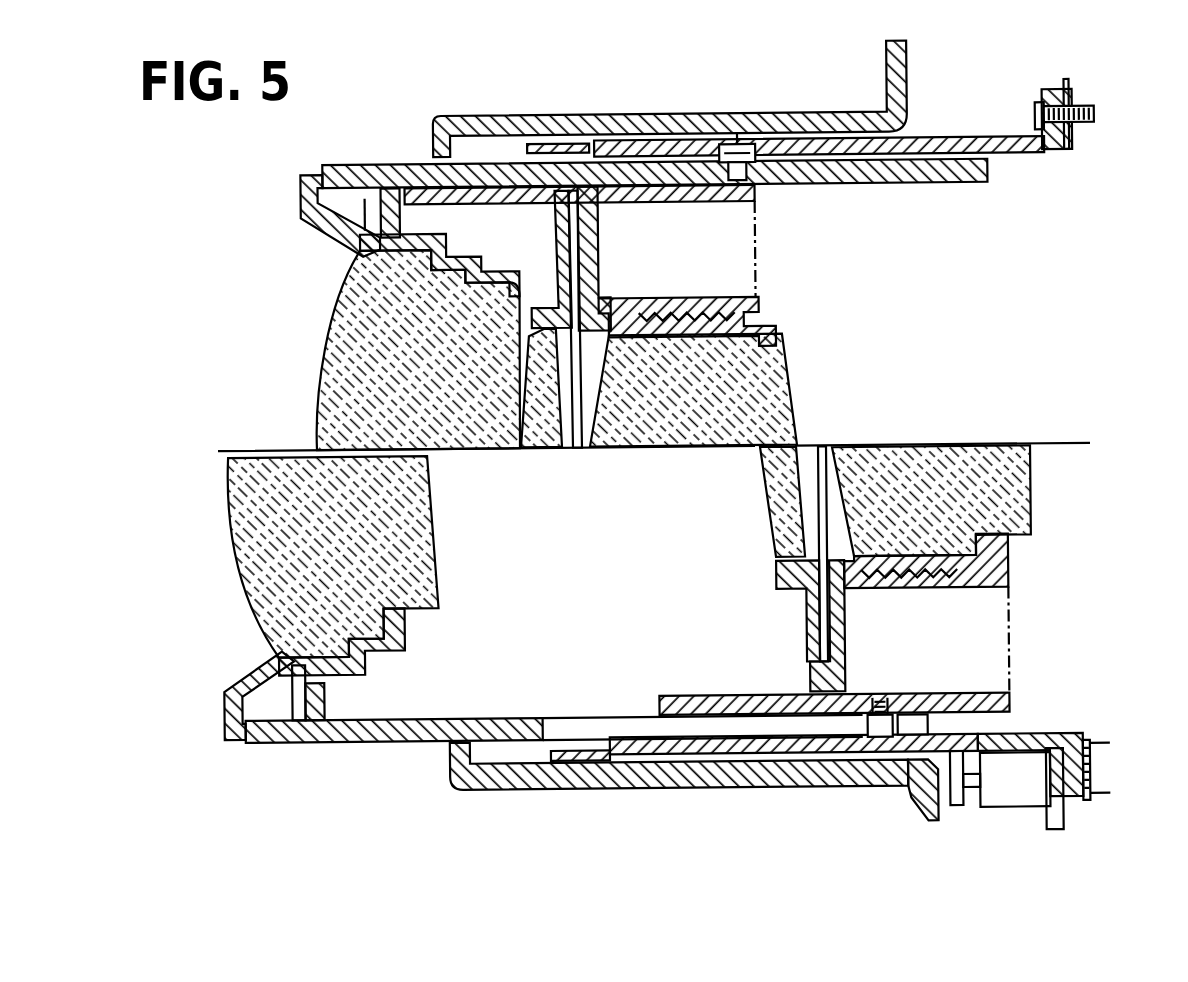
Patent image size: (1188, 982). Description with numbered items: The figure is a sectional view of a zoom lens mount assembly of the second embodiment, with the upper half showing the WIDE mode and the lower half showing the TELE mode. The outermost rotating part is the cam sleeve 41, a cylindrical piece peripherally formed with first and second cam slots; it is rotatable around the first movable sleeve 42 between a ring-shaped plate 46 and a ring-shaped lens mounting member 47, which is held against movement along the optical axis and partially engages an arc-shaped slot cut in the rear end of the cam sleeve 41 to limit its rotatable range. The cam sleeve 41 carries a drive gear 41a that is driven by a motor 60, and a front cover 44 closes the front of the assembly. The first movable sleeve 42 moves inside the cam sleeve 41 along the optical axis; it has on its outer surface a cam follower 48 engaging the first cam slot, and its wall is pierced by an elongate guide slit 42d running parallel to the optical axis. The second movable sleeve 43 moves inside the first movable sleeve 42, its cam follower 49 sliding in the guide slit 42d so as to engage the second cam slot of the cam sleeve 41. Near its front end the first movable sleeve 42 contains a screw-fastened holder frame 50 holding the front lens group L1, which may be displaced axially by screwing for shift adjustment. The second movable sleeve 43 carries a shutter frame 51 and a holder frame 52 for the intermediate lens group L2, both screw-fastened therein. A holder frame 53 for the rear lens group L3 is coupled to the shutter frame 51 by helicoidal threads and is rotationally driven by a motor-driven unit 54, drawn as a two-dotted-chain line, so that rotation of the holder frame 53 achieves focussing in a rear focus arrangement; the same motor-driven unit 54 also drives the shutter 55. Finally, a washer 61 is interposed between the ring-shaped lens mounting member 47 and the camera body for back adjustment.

The cam sleeve 41 is at (948, 141).
The drive gear 41a is at (918, 795).
The first movable sleeve 42 is at (915, 187).
The elongate guide slit 42d is at (572, 728).
The second movable sleeve 43 is at (655, 203).
The front cover 44 is at (816, 114).
The ring-shaped plate 46 is at (536, 114).
The ring-shaped lens mounting member 47 is at (1052, 155).
The cam follower 48 is at (738, 142).
The cam follower 49 is at (863, 722).
The holder frame 50 is at (467, 258).
The shutter frame 51 is at (603, 251).
The holder frame 52 is at (560, 248).
The holder frame 53 is at (706, 298).
The motor-driven unit 54 is at (760, 258).
The shutter 55 is at (822, 478).
The motor 60 is at (1010, 810).
The washer 61 is at (1080, 121).
The front lens group L1 is at (206, 570).
The intermediate lens group L2 is at (770, 528).
The rear lens group L3 is at (760, 391).